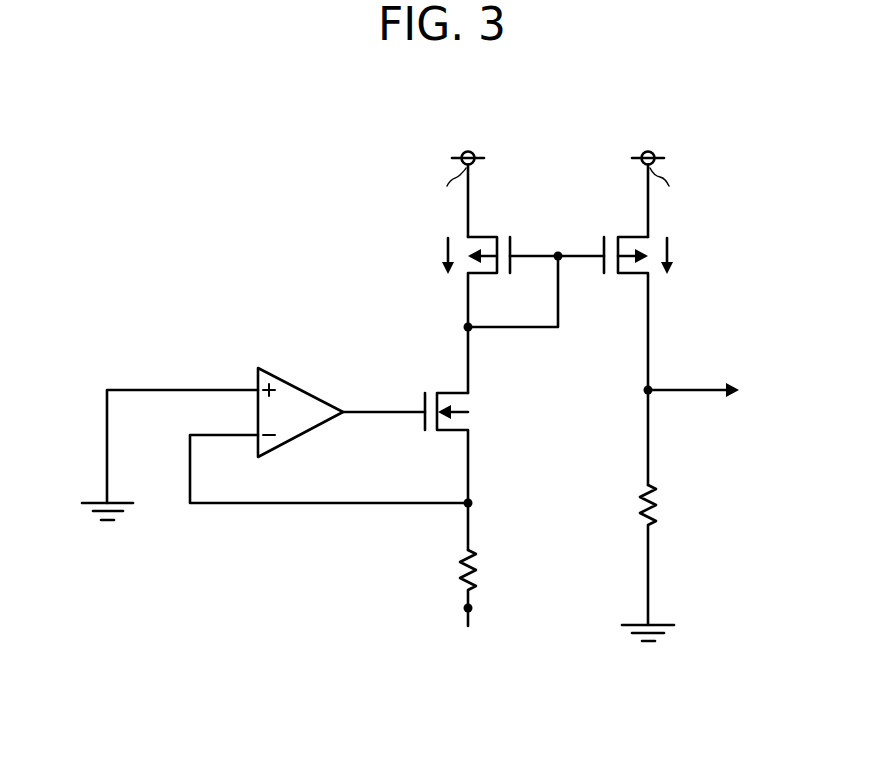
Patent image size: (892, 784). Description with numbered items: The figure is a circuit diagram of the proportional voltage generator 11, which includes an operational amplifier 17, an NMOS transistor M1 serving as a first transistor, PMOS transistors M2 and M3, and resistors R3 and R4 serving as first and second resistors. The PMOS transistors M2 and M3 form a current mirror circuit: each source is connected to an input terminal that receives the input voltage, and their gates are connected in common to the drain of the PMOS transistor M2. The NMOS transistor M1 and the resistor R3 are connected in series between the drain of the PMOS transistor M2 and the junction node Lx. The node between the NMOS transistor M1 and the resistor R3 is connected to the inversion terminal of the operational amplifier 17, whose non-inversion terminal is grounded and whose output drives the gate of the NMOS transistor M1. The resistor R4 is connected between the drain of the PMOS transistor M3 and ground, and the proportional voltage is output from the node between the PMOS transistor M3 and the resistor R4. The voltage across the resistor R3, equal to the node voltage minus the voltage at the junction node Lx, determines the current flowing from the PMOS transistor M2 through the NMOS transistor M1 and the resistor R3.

The proportional voltage generator 11 is at (718, 167).
The operational amplifier 17 is at (283, 380).
The NMOS transistor M1 is at (405, 433).
The PMOS transistor M2 is at (536, 267).
The PMOS transistor M3 is at (626, 346).
The resistor R3 is at (489, 579).
The resistor R4 is at (668, 555).
The junction node Lx is at (472, 608).